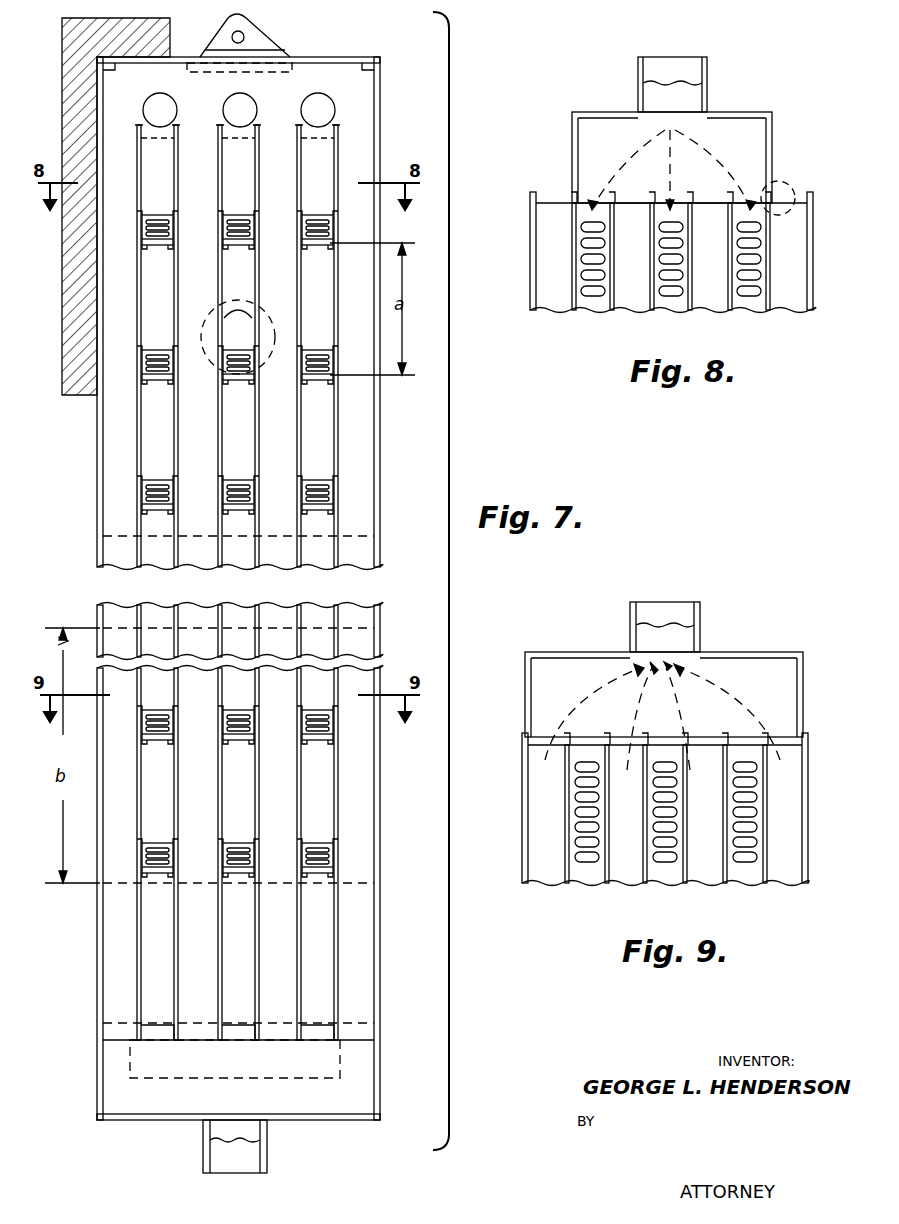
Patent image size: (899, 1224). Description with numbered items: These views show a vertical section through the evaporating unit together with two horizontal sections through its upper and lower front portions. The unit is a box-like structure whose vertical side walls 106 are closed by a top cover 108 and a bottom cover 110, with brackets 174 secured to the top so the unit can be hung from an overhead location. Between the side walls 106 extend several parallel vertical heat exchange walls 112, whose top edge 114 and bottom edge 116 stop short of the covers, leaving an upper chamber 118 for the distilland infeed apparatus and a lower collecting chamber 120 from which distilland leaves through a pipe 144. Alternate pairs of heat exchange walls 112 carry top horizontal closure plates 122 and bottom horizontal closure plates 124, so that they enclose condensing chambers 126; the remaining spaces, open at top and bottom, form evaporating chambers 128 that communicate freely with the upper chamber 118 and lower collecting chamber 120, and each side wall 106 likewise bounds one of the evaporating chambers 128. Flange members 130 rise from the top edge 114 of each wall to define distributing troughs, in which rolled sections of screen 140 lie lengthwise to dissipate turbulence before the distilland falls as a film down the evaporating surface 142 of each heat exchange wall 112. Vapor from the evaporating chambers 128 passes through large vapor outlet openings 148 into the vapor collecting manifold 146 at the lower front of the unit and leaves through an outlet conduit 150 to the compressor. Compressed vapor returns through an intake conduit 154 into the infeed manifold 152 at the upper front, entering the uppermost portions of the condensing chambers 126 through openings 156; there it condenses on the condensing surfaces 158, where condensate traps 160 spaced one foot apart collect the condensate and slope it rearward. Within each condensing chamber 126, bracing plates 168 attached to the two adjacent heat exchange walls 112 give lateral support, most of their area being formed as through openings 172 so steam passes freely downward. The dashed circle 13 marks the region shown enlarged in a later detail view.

In FIG. 8, the detail circle for FIG. 13 is at (788, 182).
In FIG. 7, the side walls 106 is at (373, 780).
In FIG. 8, the side walls 106 is at (530, 278).
In FIG. 9, the side walls 106 is at (522, 820).
In FIG. 7, the top cover 108 is at (298, 57).
In FIG. 7, the bottom cover 110 is at (328, 1120).
In FIG. 7, the heat exchange walls 112 is at (338, 454).
In FIG. 8, the heat exchange walls 112 is at (766, 306).
In FIG. 9, the heat exchange walls 112 is at (760, 888).
In FIG. 7, the top edge 114 is at (127, 132).
In FIG. 7, the bottom edge 116 is at (178, 1042).
In FIG. 7, the upper chamber 118 is at (302, 106).
In FIG. 7, the lower collecting chamber 120 is at (172, 1098).
In FIG. 7, the top horizontal closure plates 122 is at (153, 156).
In FIG. 7, the bottom horizontal closure plates 124 is at (252, 1048).
In FIG. 7, the condensing chambers 126 is at (241, 291).
In FIG. 7, the evaporating chambers 128 is at (240, 294).
In FIG. 8, the evaporating chambers 128 is at (800, 308).
In FIG. 9, the evaporating chambers 128 is at (524, 882).
In FIG. 7, the flange members 130 is at (219, 116).
In FIG. 7, the screen 140 is at (160, 104).
In FIG. 7, the evaporating surface 142 is at (137, 412).
In FIG. 8, the evaporating surface 142 is at (574, 310).
In FIG. 9, the evaporating surface 142 is at (558, 884).
In FIG. 7, the pipe 144 is at (267, 1166).
In FIG. 9, the vapor collecting manifold 146 is at (768, 642).
In FIG. 9, the vapor outlet openings 148 is at (540, 772).
In FIG. 9, the outlet conduit 150 is at (700, 604).
In FIG. 8, the infeed manifold 152 is at (750, 112).
In FIG. 8, the intake conduit 154 is at (707, 82).
In FIG. 8, the openings 156 is at (668, 200).
In FIG. 7, the condensing surfaces 158 is at (165, 442).
In FIG. 7, the condensate traps 160 is at (164, 248).
In FIG. 7, the bracing plates 168 is at (234, 744).
In FIG. 8, the bracing plates 168 is at (600, 310).
In FIG. 9, the bracing plates 168 is at (656, 750).
In FIG. 8, the through openings 172 is at (674, 308).
In FIG. 9, the through openings 172 is at (596, 766).
In FIG. 7, the brackets 174 is at (263, 35).